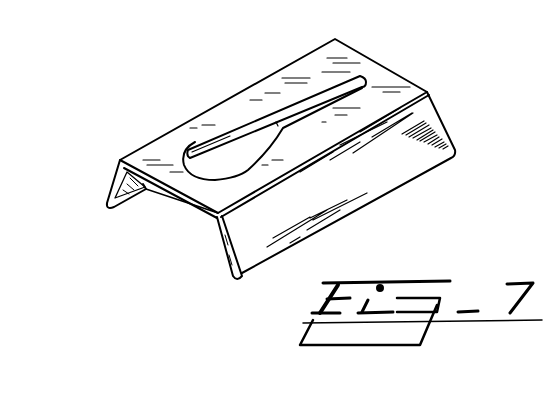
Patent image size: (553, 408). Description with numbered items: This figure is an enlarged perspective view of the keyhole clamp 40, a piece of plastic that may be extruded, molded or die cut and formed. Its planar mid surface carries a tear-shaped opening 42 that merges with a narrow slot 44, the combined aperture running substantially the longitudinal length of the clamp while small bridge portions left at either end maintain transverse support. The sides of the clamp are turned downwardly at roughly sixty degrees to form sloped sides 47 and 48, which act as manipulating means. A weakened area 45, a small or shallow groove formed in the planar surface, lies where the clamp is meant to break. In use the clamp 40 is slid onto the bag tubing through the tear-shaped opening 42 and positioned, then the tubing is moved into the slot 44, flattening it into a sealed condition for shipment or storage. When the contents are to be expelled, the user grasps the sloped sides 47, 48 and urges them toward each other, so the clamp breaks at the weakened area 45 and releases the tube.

The keyhole clamp 40 is at (83, 142).
The tear-shaped opening 42 is at (228, 152).
The narrow slot 44 is at (321, 100).
The weakened area 45 is at (175, 192).
The sloped side 47 is at (108, 192).
The sloped side 48 is at (223, 247).